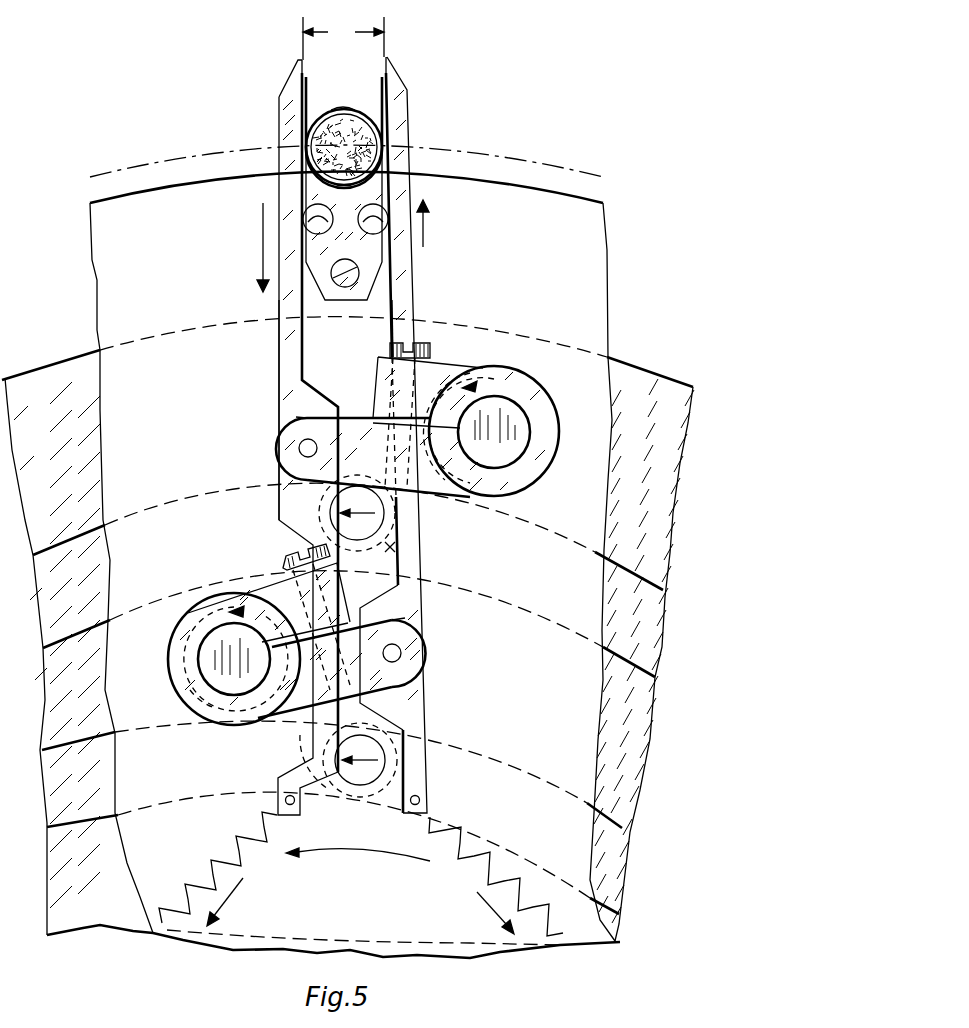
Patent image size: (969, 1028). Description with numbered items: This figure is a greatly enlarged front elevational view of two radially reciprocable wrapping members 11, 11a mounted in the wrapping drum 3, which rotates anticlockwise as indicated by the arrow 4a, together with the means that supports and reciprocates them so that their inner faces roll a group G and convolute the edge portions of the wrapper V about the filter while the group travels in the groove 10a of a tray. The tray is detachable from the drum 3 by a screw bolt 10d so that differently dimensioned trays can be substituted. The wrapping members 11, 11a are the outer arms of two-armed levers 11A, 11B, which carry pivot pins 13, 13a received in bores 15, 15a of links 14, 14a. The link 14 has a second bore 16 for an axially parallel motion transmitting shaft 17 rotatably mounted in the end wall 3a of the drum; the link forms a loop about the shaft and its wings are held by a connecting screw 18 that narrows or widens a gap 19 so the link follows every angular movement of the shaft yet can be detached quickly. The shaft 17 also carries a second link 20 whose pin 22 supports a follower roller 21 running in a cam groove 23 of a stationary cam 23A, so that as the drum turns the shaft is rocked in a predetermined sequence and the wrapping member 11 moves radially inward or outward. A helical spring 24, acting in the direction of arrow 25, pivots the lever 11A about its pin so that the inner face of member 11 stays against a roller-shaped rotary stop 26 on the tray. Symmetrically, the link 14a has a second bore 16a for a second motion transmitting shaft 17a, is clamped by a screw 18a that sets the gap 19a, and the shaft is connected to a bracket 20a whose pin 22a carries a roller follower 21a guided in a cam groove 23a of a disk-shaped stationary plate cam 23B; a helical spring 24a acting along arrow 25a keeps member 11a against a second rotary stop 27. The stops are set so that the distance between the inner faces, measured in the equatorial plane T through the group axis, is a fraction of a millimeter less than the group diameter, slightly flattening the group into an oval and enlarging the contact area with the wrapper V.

The wrapping drum 3 is at (97, 320).
The end wall of the wrapping drum 3a is at (108, 282).
The equatorial plane T is at (432, 158).
The group G is at (330, 115).
The wrapper V is at (372, 105).
The wrapping member 11 is at (282, 108).
The wrapping member 11a is at (404, 108).
The two-armed lever 11A is at (276, 346).
The two-armed lever 11B is at (392, 320).
The groove of the tray 10a is at (375, 190).
The screw bolt 10d is at (352, 282).
The rotary stop 26 is at (263, 203).
The rotary stop 27 is at (425, 240).
The pivot pin 13 is at (283, 462).
The link 14 is at (290, 414).
The bore 15 is at (300, 450).
The second bore 16 is at (530, 428).
The motion transmitting shaft 17 is at (520, 440).
The connecting screw 18 is at (431, 350).
The gap 19 is at (378, 420).
The second link 20 is at (472, 502).
The follower roller 21 is at (315, 525).
The pin 22 is at (395, 548).
The pivot pin 13a is at (410, 676).
The second link 14a is at (410, 624).
The bore 15a is at (400, 654).
The second bore 16a is at (205, 650).
The second motion transmitting shaft 17a is at (215, 672).
The screw 18a is at (282, 572).
The gap 19a is at (355, 614).
The second link or bracket 20a is at (285, 760).
The roller follower 21a is at (420, 800).
The pin 22a is at (398, 766).
The cam groove 23 is at (640, 646).
The stationary cam 23A is at (636, 765).
The cam groove 23a is at (598, 893).
The stationary plate cam 23B is at (613, 944).
The helical spring 24 is at (248, 870).
The helical spring 24a is at (465, 872).
The arrow indicating direction of spring action 25 is at (232, 902).
The arrow indicating direction of spring action 25a is at (492, 912).
The arrow indicating drum rotation 4a is at (352, 852).